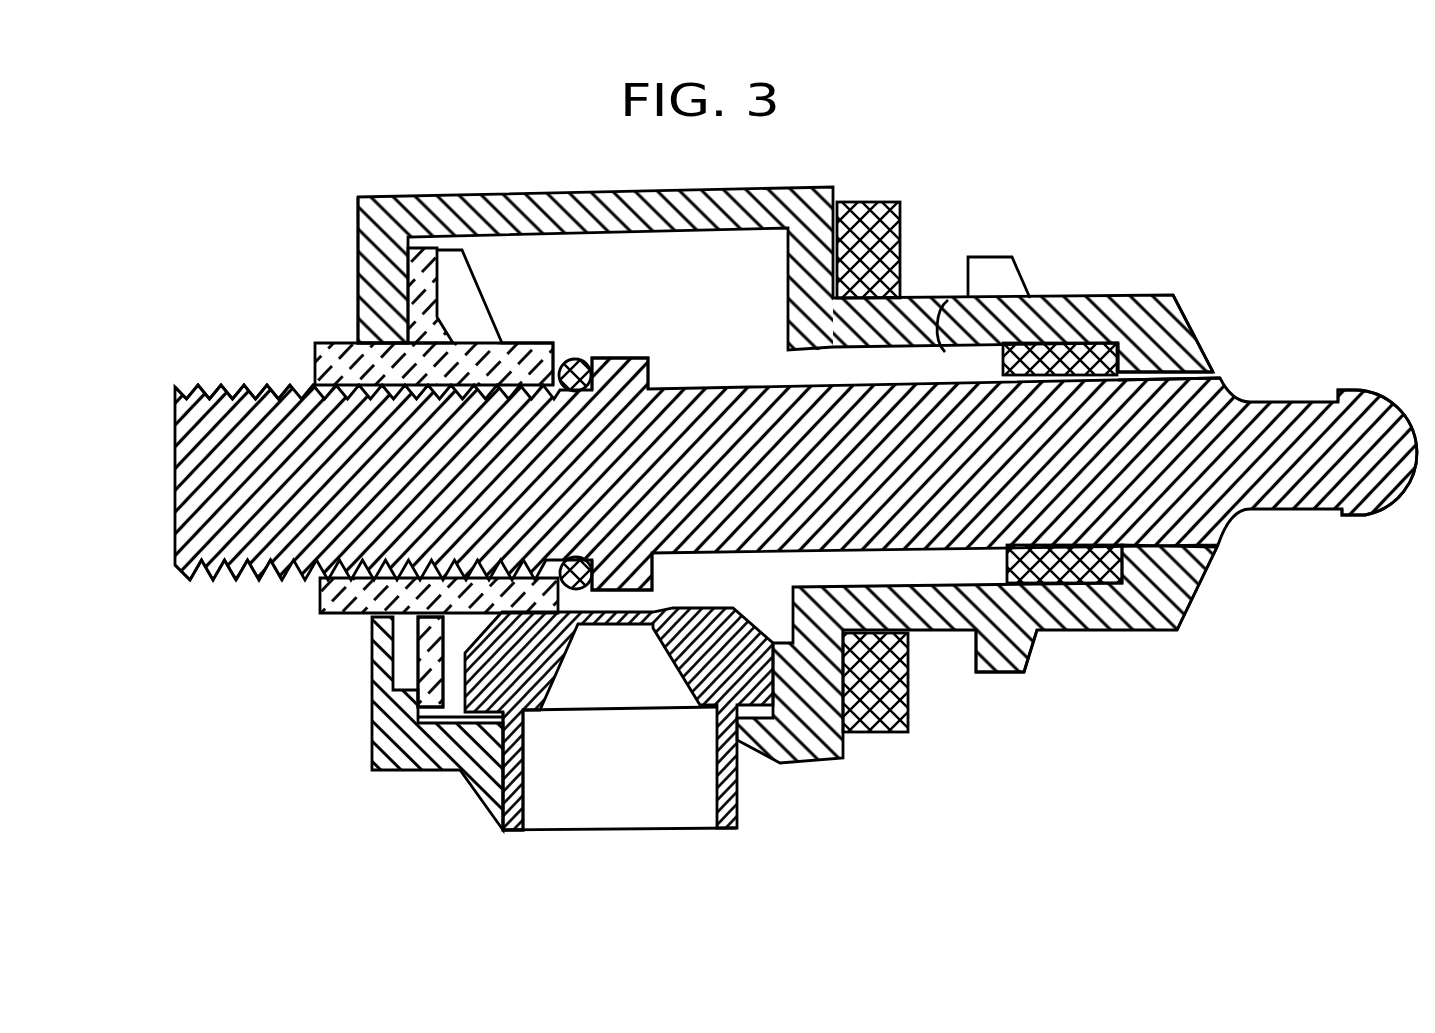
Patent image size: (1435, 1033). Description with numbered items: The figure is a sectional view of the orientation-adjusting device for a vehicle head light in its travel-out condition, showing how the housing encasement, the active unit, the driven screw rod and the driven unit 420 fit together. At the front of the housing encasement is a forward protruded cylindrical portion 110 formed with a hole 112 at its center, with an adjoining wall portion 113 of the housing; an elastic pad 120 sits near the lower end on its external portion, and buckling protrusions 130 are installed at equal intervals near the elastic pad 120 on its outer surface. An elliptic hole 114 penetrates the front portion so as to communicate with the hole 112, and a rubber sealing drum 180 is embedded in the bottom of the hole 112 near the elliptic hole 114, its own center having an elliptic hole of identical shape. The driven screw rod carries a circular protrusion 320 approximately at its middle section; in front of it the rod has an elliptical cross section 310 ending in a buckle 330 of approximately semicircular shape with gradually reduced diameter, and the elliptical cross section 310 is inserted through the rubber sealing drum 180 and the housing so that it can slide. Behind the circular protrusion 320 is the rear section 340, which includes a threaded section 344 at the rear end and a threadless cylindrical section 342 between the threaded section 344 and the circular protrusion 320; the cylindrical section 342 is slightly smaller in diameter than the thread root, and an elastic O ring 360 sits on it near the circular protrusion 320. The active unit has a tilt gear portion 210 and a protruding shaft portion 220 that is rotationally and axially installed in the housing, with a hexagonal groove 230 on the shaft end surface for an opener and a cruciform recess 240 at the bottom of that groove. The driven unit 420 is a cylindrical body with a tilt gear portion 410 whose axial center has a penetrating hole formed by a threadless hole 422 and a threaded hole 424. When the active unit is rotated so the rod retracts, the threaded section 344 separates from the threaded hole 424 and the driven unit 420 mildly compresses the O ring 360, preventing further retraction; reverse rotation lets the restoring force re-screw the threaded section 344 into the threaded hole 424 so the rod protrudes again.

The cylindrical portion 110 is at (1093, 318).
The hole 112 is at (944, 300).
The stepped portion 113 is at (1143, 337).
The elliptic hole 114 is at (1182, 352).
The elastic pad 120 is at (902, 235).
The buckling protrusions 130 is at (993, 268).
The rubber sealing drum 180 is at (1063, 573).
The gear portion 210 is at (460, 637).
The protruding shaft portion 220 is at (483, 797).
The groove 230 is at (718, 752).
The cruciform recess 240 is at (690, 670).
The elliptical cross section 310 is at (1167, 388).
The circular protrusion 320 is at (612, 370).
The buckle 330 is at (1368, 418).
The rear section 340 is at (207, 512).
The cylindrical section 342 is at (368, 330).
The threaded section 344 is at (240, 387).
The O ring 360 is at (573, 362).
The gear portion 410 is at (372, 688).
The nut 420 is at (340, 620).
The hole 422 is at (250, 578).
The threaded hole 424 is at (540, 346).